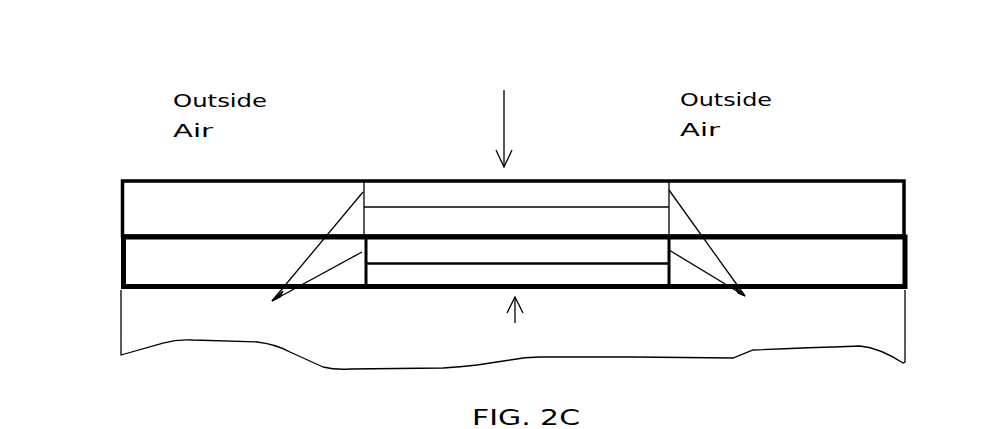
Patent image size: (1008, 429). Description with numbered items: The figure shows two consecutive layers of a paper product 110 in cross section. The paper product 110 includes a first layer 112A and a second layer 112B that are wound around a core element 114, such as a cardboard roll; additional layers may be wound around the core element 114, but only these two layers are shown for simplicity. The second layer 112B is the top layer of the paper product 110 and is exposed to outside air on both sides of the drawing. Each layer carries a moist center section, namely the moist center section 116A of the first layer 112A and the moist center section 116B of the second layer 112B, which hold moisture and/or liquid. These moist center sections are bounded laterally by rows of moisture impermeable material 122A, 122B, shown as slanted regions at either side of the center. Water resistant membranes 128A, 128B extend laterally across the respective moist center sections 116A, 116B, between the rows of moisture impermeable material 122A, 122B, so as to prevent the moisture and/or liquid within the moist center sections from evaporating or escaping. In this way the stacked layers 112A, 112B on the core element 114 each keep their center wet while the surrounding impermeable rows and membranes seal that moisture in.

The paper product 110 is at (121, 41).
The first layer 112A is at (122, 266).
The second layer 112B is at (121, 213).
The core element 114 is at (121, 324).
The moist center section 116A is at (527, 323).
The moist center section 116B is at (505, 116).
The row of moisture impermeable material 122A is at (306, 258).
The row of moisture impermeable material 122B is at (733, 253).
The water resistant membrane 128A is at (450, 264).
The water resistant membrane 128B is at (426, 207).